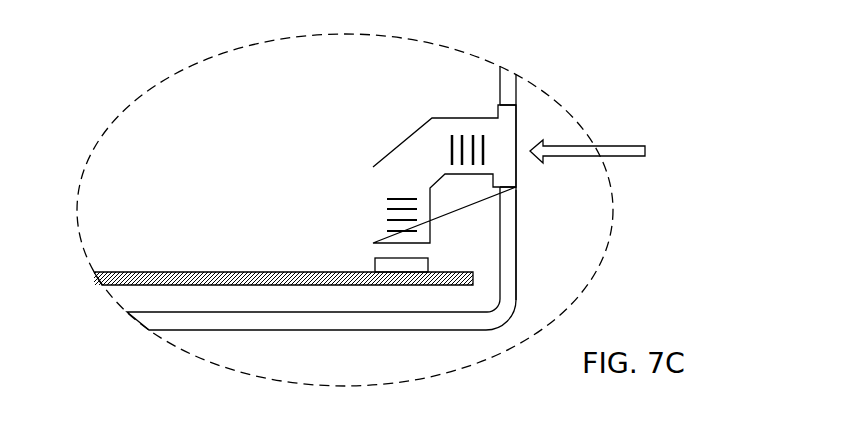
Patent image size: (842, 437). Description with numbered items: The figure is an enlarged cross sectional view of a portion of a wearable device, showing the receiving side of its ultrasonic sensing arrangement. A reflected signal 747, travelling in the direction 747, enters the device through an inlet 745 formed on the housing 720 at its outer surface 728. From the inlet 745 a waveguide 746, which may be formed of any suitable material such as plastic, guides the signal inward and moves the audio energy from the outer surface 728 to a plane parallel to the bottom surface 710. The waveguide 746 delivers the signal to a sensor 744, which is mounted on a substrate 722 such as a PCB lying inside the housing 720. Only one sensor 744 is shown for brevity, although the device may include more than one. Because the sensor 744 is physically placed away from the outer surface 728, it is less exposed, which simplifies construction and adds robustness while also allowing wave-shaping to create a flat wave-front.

The bottom surface 710 is at (273, 332).
The housing 720 is at (187, 331).
The substrate 722 is at (232, 272).
The outer surface 728 is at (517, 238).
The sensor 744 is at (375, 265).
The inlet 745 is at (515, 125).
The waveguide 746 is at (392, 151).
The reflected signal 747 is at (627, 145).